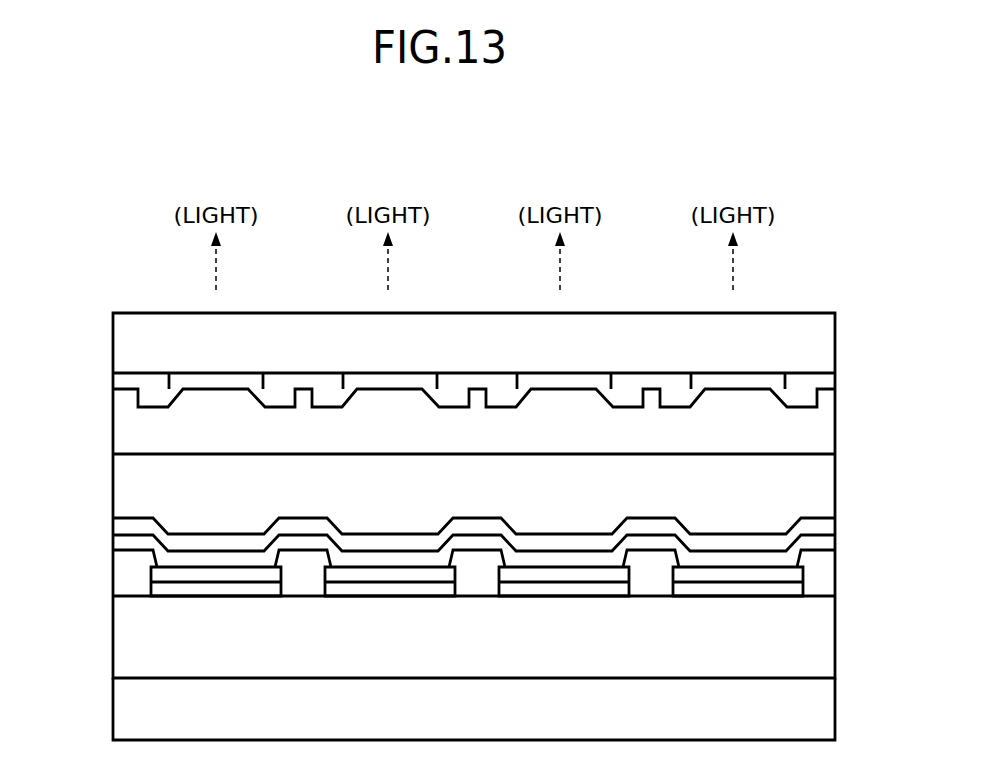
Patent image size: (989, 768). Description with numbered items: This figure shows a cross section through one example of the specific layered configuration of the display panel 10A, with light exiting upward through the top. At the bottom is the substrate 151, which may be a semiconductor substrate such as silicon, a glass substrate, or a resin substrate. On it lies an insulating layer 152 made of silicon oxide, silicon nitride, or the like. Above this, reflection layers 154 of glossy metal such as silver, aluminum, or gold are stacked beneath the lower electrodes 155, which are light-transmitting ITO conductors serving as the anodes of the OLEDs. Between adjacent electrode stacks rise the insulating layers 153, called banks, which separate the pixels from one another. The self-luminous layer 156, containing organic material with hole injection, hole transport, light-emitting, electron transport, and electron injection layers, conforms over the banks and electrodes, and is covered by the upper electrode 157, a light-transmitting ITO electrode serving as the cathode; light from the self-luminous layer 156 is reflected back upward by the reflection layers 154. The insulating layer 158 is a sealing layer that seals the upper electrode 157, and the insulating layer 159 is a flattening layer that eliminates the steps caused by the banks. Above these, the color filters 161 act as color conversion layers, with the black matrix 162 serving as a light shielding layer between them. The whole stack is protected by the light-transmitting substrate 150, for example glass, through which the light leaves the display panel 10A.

The display panel 10A is at (700, 152).
The substrate 150 is at (125, 329).
The substrate 151 is at (125, 709).
The insulating layer 152 is at (125, 653).
The insulating layer 153 is at (298, 583).
The reflection layer 154 is at (163, 589).
The lower electrode 155 is at (162, 574).
The self-luminous layer 156 is at (122, 548).
The upper electrode 157 is at (122, 526).
The insulating layer 158 is at (125, 469).
The insulating layer 159 is at (125, 430).
The color filter 161 is at (210, 380).
The black matrix 162 is at (292, 380).